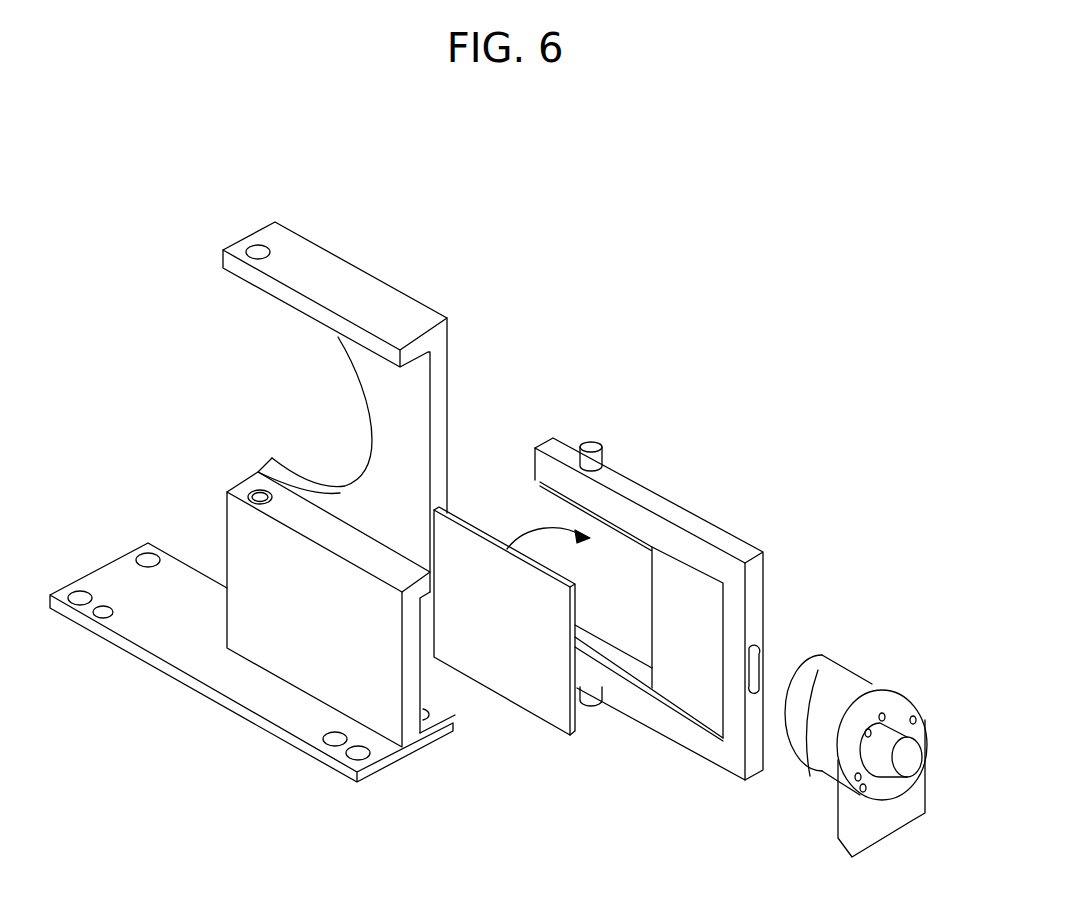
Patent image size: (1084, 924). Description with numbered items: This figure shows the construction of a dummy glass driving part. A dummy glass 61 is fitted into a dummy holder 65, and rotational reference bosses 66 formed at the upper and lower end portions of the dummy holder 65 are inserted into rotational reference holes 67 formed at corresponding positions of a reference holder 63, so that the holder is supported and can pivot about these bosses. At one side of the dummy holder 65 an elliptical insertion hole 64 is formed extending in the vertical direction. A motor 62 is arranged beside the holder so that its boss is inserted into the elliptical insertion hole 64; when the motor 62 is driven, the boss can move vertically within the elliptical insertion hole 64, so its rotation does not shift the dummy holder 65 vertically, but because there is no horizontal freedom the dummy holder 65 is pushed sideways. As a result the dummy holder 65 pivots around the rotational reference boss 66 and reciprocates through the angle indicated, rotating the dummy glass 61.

The dummy glass 61 is at (540, 705).
The motor 62 is at (825, 762).
The reference holder 63 is at (277, 647).
The elliptical insertion hole 64 is at (763, 660).
The dummy holder 65 is at (682, 522).
The rotational reference boss 66 is at (593, 442).
The rotational reference hole 67 is at (248, 485).